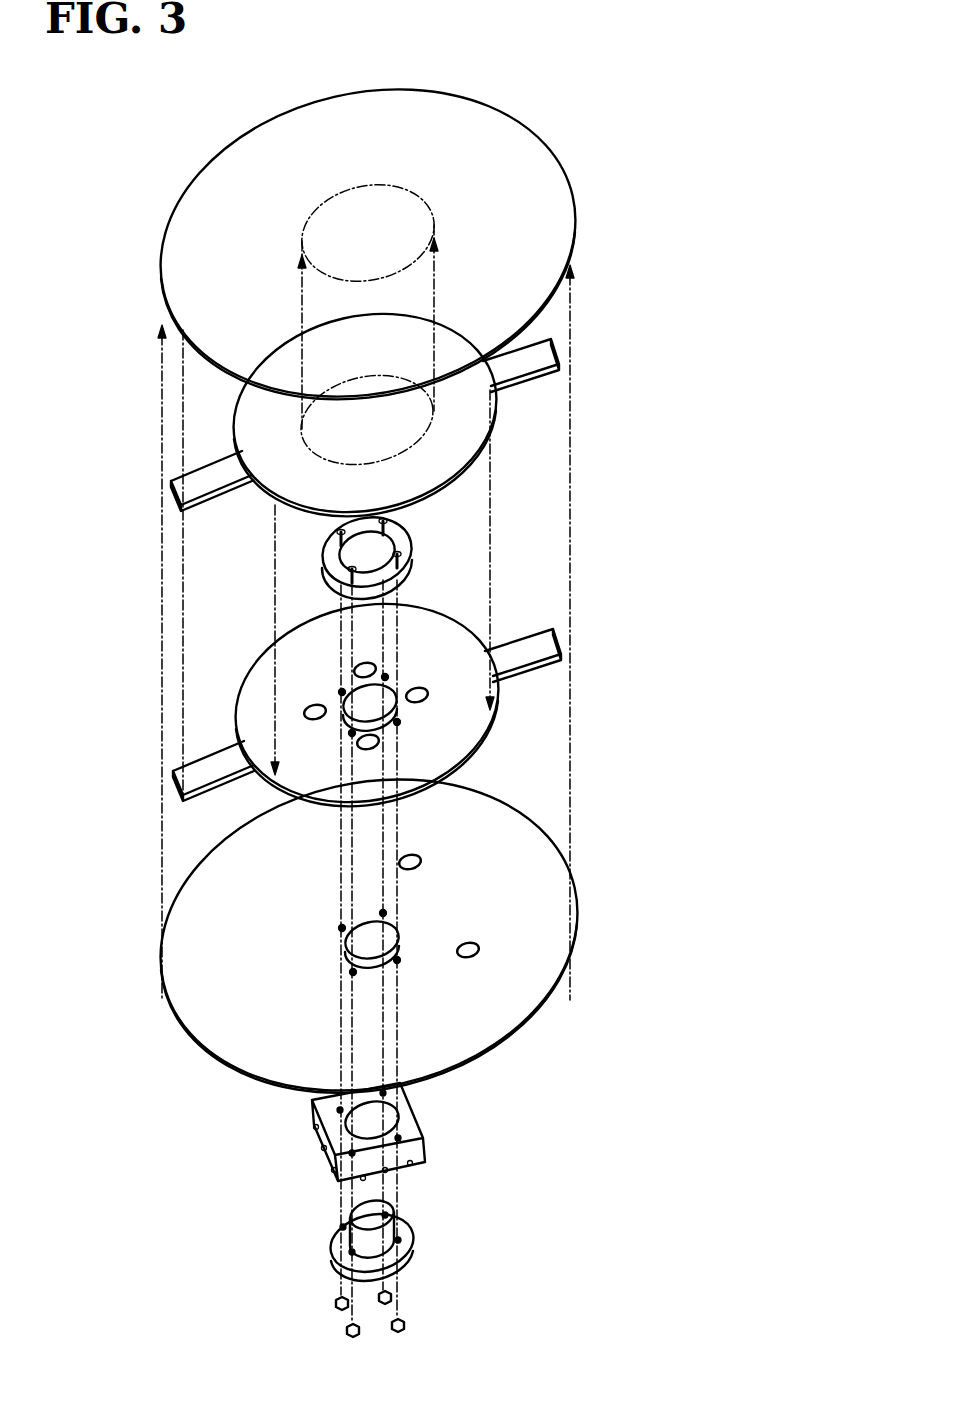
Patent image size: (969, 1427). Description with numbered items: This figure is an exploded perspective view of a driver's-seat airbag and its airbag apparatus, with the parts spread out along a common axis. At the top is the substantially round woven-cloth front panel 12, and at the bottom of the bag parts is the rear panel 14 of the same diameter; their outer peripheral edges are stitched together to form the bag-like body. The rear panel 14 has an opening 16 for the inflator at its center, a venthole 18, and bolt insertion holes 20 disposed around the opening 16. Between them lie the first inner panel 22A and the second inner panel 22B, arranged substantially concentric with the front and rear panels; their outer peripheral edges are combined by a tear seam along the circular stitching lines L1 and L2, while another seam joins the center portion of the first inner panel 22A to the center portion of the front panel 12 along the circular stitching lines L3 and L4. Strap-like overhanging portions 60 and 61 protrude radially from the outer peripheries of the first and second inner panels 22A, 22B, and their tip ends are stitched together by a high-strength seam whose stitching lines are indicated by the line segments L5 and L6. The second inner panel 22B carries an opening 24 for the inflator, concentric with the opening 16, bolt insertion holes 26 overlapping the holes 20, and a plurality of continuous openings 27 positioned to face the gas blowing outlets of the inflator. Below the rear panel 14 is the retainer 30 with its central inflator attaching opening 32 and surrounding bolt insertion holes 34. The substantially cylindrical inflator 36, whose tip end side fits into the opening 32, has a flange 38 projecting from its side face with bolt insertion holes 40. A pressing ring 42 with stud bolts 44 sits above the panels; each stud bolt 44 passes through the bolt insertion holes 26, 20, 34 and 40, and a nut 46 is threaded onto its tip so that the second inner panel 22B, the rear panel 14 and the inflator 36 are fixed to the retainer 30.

The front panel 12 is at (505, 145).
The rear panel 14 is at (212, 1040).
The opening for the inflator 16 is at (350, 947).
The venthole 18 is at (423, 857).
The bolt insertion hole 20 is at (385, 913).
The first inner panel 22A is at (487, 398).
The second inner panel 22B is at (500, 682).
The opening for the inflator 24 is at (343, 713).
The bolt insertion hole 26 is at (388, 675).
The continuous opening 27 is at (367, 663).
The retainer 30 is at (427, 1127).
The inflator attaching opening 32 is at (370, 1120).
The bolt insertion hole 34 is at (315, 1115).
The inflator 36 is at (385, 1212).
The flange 38 is at (408, 1223).
The bolt insertion hole 40 is at (340, 1227).
The pressing ring 42 is at (398, 540).
The stud bolt 44 is at (403, 573).
The nut 46 is at (348, 1327).
The overhanging portion 60 is at (520, 355).
The overhanging portion 61 is at (530, 645).
The stitching line L1 is at (228, 418).
The stitching line L2 is at (265, 650).
The stitching line L3 is at (367, 463).
The stitching line L4 is at (365, 282).
The stitching line L5 is at (570, 338).
The stitching line L6 is at (568, 641).